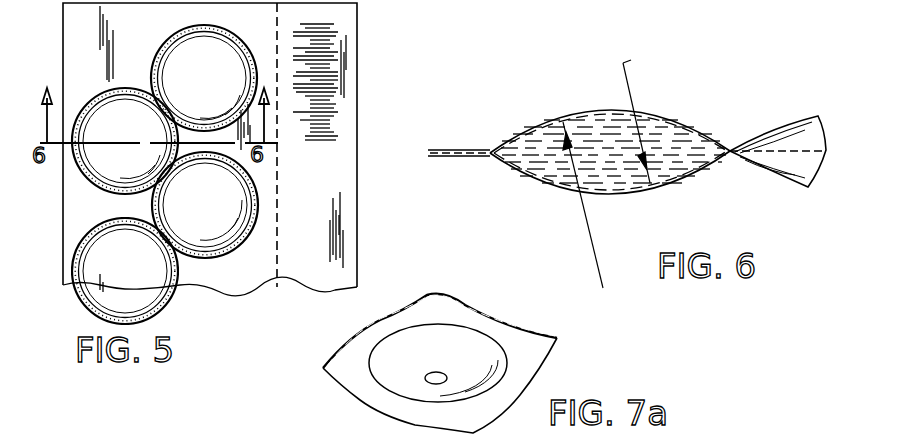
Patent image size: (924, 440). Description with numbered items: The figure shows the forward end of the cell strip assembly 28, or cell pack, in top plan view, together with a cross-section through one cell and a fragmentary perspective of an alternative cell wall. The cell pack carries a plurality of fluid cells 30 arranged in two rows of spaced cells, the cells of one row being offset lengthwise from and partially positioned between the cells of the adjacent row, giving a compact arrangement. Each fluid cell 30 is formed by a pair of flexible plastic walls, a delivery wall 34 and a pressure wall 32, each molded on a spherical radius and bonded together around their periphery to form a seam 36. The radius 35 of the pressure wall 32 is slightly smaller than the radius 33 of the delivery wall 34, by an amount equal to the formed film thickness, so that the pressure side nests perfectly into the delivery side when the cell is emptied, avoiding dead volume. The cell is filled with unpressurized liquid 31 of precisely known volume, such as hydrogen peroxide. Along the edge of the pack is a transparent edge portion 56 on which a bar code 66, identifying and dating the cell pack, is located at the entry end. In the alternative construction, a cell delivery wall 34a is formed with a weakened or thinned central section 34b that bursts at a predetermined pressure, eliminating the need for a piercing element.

In FIG. 5, the cell strip assembly 28 is at (67, 24).
In FIG. 5, the fluid cell 30 is at (132, 105).
In FIG. 6, the fluid cell 30 is at (508, 135).
In FIG. 6, the liquid 31 is at (580, 125).
In FIG. 6, the pressure wall 32 is at (680, 125).
In FIG. 6, the radius of delivery side 33 is at (628, 80).
In FIG. 6, the delivery wall 34 is at (682, 186).
In FIG. 7a, the cell delivery wall 34a is at (468, 340).
In FIG. 7a, the thinned central section 34b is at (432, 380).
In FIG. 6, the radius of pressure side 35 is at (592, 255).
In FIG. 5, the seam 36 is at (88, 108).
In FIG. 6, the seam 36 is at (488, 156).
In FIG. 5, the transparent edge portion 56 is at (340, 265).
In FIG. 5, the bar code 66 is at (325, 68).